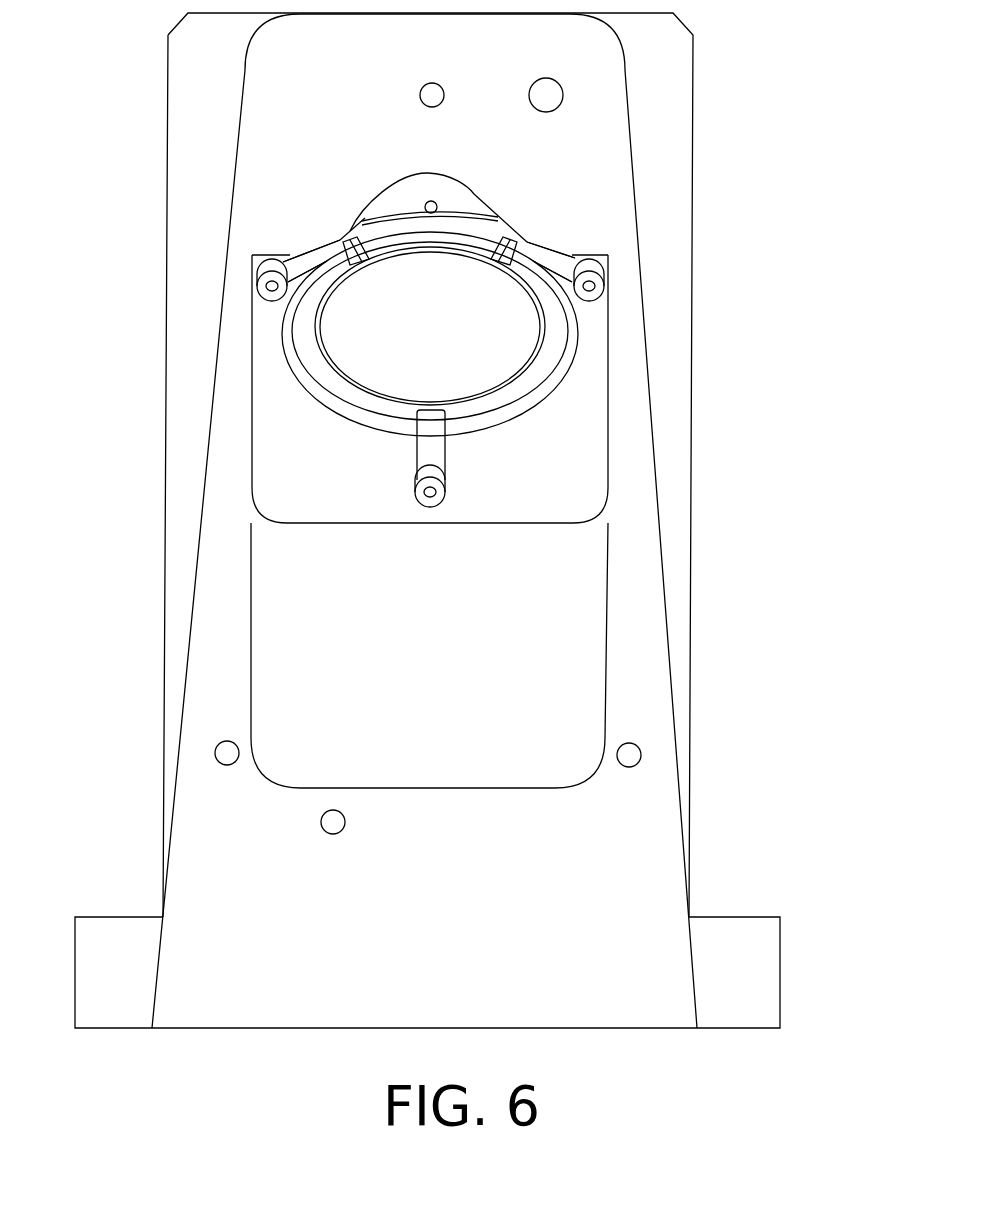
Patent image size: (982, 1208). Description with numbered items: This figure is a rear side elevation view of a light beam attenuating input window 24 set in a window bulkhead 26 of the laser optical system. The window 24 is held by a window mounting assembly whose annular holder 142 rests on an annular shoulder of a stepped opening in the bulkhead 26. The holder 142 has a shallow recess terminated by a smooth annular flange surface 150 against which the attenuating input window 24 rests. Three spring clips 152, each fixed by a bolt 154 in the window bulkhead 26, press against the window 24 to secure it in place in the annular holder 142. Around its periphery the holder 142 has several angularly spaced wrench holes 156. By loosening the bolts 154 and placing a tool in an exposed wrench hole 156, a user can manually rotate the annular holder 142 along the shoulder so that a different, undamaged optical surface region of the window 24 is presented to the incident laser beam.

The light beam attenuating input window 24 is at (452, 327).
The window bulkhead 26 is at (300, 954).
The annular holder 142 is at (317, 328).
The annular flange surface 150 is at (392, 227).
The spring clips 152 is at (303, 264).
The bolts 154 is at (256, 285).
The wrench holes 156 is at (510, 218).